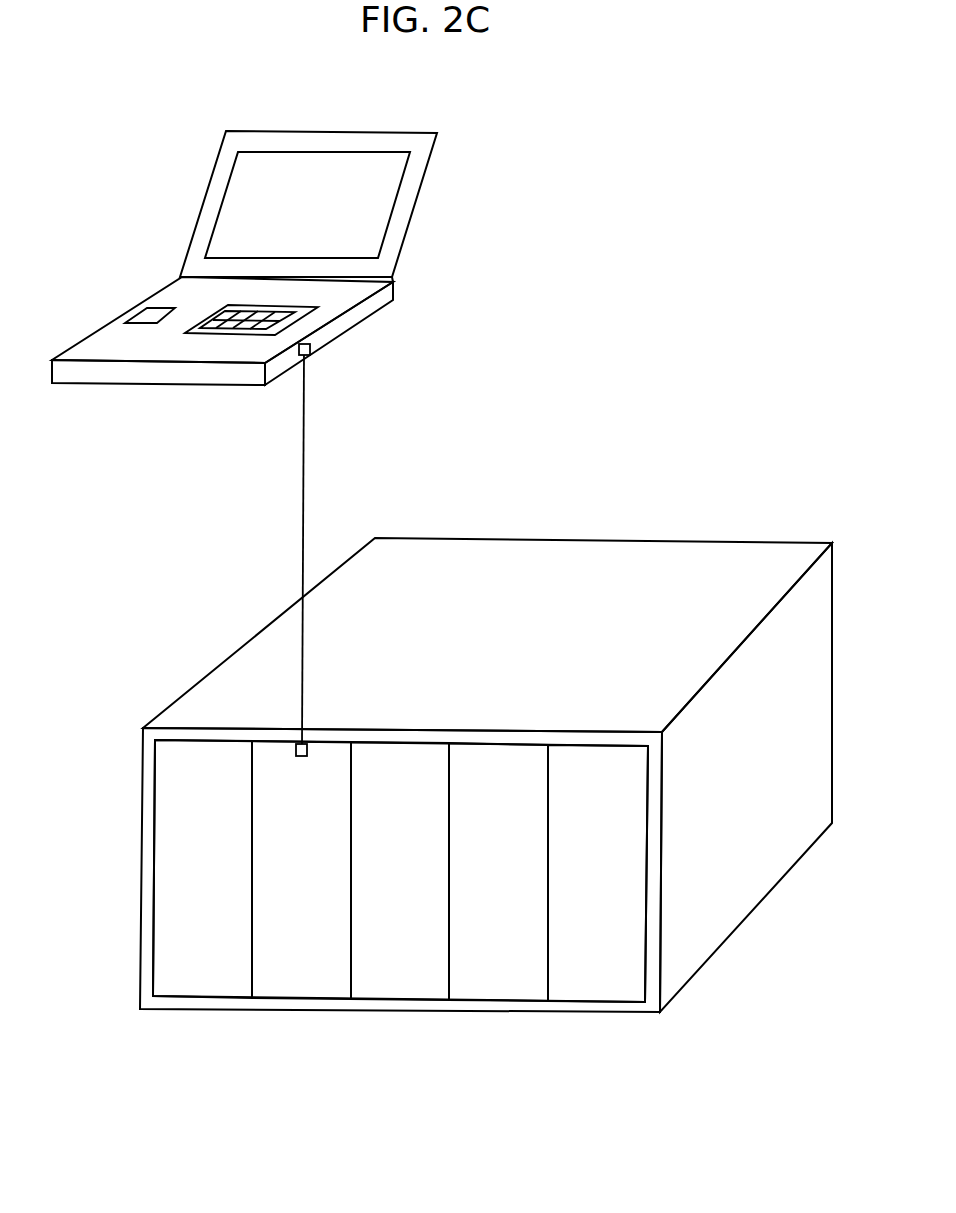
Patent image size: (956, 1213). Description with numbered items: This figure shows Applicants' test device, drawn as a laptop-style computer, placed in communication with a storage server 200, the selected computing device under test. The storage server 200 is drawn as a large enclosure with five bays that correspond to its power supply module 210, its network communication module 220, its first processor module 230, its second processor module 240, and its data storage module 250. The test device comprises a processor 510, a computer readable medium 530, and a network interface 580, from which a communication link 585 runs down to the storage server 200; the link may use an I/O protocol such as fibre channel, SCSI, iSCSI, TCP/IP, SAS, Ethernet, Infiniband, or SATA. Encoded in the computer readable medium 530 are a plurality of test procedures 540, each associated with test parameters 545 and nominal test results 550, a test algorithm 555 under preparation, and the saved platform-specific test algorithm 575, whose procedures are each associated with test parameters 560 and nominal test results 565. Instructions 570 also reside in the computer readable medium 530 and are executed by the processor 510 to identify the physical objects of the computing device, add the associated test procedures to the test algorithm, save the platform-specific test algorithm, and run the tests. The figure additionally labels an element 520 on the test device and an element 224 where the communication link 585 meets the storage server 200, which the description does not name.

The storage server 200 is at (369, 1036).
The power supply module 210 is at (217, 878).
The network communication module 220 is at (317, 878).
The first processor module 230 is at (419, 879).
The second processor module 240 is at (514, 880).
The data storage module 250 is at (610, 881).
The enclosure connector port 224 is at (303, 743).
The processor 510 is at (130, 318).
The display 520 is at (324, 210).
The computer readable medium 530 is at (132, 351).
The plurality of test procedures 540 is at (205, 334).
The test parameters 545 is at (230, 305).
The nominal test results 550 is at (225, 336).
The test algorithm 555 is at (258, 305).
The test parameters 560 is at (245, 337).
The nominal test results 565 is at (278, 305).
The instructions 570 is at (265, 338).
The platform-specific test algorithm 575 is at (300, 305).
The network interface 580 is at (311, 347).
The communication link 585 is at (305, 392).